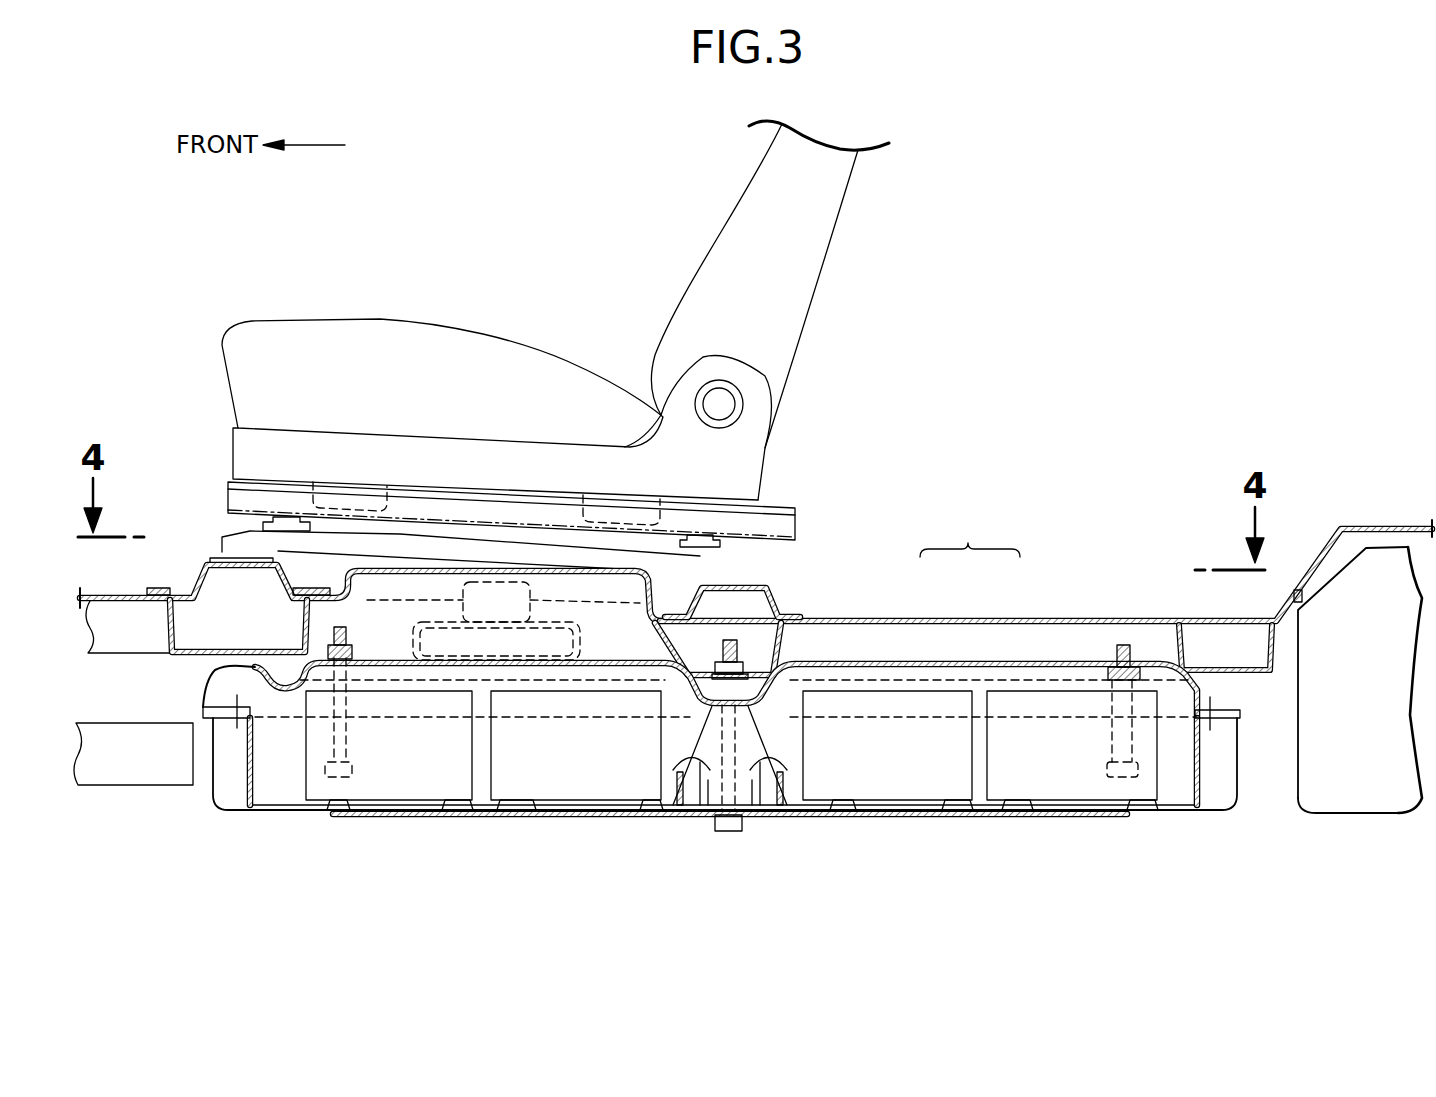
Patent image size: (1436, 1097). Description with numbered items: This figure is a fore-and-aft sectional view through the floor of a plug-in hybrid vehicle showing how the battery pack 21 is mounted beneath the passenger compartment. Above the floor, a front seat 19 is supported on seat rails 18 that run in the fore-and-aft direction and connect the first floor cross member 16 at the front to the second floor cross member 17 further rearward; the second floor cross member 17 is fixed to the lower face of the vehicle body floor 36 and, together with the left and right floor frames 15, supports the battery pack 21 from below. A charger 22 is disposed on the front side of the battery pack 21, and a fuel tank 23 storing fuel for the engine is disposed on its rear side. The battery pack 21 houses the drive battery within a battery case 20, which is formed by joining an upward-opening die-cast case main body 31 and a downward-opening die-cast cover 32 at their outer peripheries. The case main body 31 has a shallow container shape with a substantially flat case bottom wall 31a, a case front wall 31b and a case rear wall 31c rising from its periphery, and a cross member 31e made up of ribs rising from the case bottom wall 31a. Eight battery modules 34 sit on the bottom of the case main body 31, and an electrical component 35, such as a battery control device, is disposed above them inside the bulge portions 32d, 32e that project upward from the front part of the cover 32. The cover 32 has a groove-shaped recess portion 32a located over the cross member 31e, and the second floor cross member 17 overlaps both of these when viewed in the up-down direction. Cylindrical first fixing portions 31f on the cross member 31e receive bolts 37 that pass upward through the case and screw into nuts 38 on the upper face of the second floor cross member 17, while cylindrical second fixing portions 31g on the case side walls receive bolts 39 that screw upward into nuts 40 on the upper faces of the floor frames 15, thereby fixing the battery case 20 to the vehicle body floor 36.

The floor frame 15 is at (130, 656).
The first floor cross member 16 is at (205, 658).
The second floor cross member 17 is at (783, 654).
The seat rail 18 is at (473, 548).
The front seat 19 is at (551, 320).
The battery case 20 is at (970, 538).
The battery pack 21 is at (532, 828).
The charger 22 is at (118, 776).
The fuel tank 23 is at (1370, 794).
The case main body 31 is at (725, 724).
The case bottom wall 31a is at (857, 821).
The case front wall 31b is at (213, 786).
The case rear wall 31c is at (1227, 789).
The cross member 31e is at (770, 740).
The first fixing portion 31f is at (713, 727).
The second fixing portion 31g is at (323, 731).
The cover 32 is at (516, 554).
The recess portion 32a is at (768, 614).
The bulge portion 32d is at (552, 598).
The bulge portion 32e is at (408, 580).
The battery module 34 is at (377, 760).
The electrical component 35 is at (500, 580).
The vehicle body floor 36 is at (885, 616).
The bolt 37 is at (730, 834).
The nut 38 is at (716, 660).
The bolt 39 is at (327, 778).
The nut 40 is at (355, 645).